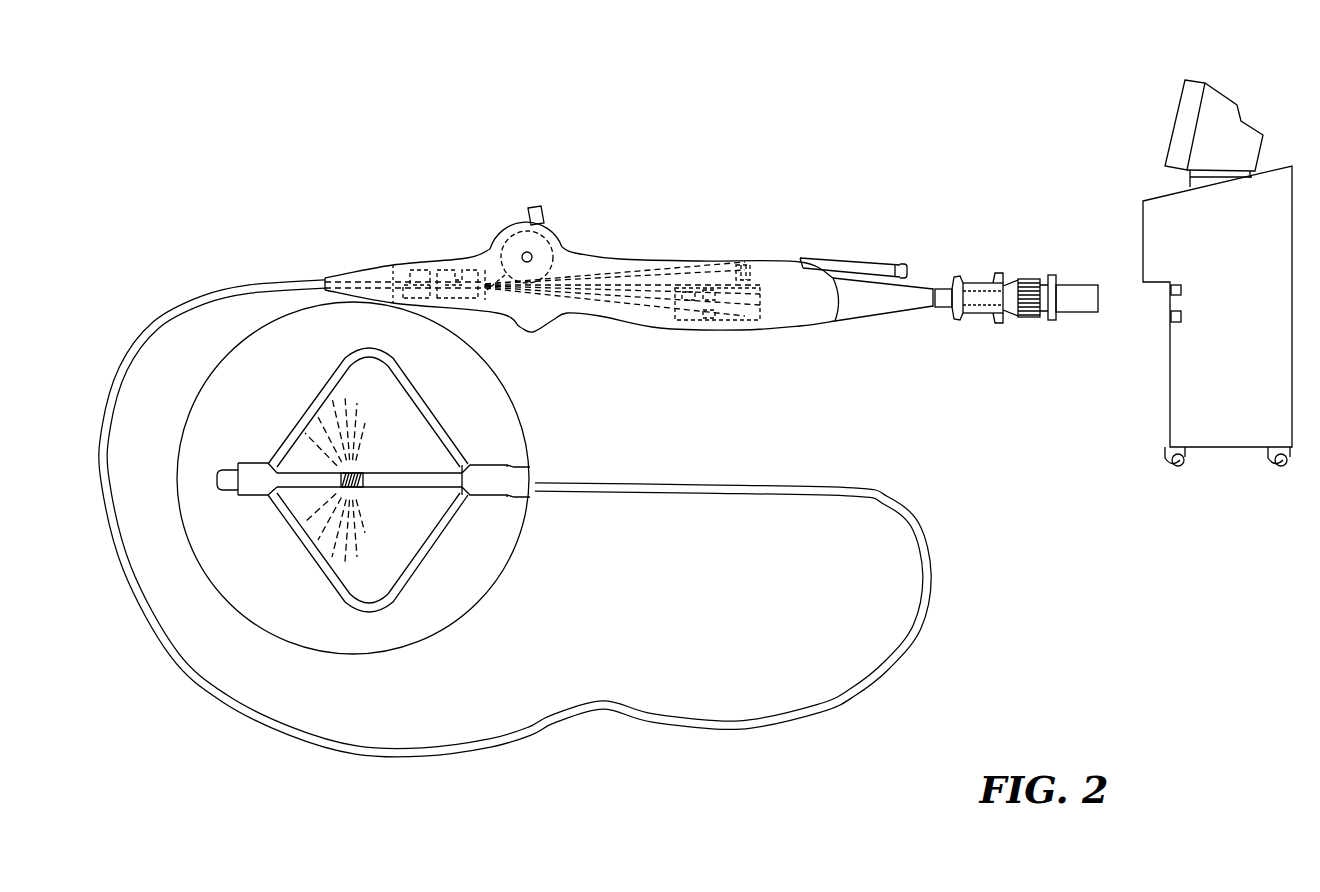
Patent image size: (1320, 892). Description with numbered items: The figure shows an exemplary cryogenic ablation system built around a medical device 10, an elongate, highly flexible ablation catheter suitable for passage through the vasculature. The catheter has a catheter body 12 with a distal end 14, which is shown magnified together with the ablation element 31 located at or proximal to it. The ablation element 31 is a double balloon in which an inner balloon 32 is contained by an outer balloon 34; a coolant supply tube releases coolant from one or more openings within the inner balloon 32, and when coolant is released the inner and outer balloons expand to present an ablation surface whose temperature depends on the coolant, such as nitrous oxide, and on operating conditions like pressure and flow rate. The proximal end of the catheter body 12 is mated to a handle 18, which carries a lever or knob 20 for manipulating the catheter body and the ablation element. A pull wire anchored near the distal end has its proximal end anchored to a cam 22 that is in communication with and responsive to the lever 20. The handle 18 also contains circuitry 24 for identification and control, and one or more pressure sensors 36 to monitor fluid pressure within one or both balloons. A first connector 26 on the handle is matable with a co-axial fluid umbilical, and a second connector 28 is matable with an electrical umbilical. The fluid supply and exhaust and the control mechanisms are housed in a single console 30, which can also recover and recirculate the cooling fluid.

The medical device 10 is at (255, 218).
The catheter body 12 is at (720, 482).
The distal end 14 is at (218, 470).
The handle 18 is at (888, 314).
The lever or knob 20 is at (538, 205).
The cam 22 is at (552, 254).
The circuitry 24 is at (465, 268).
The first connector 26 is at (1002, 274).
The second connector 28 is at (1085, 300).
The console 30 is at (1213, 262).
The ablation element 31 is at (306, 576).
The inner balloon 32 is at (322, 421).
The outer balloon 34 is at (338, 373).
The pressure sensors 36 is at (683, 290).